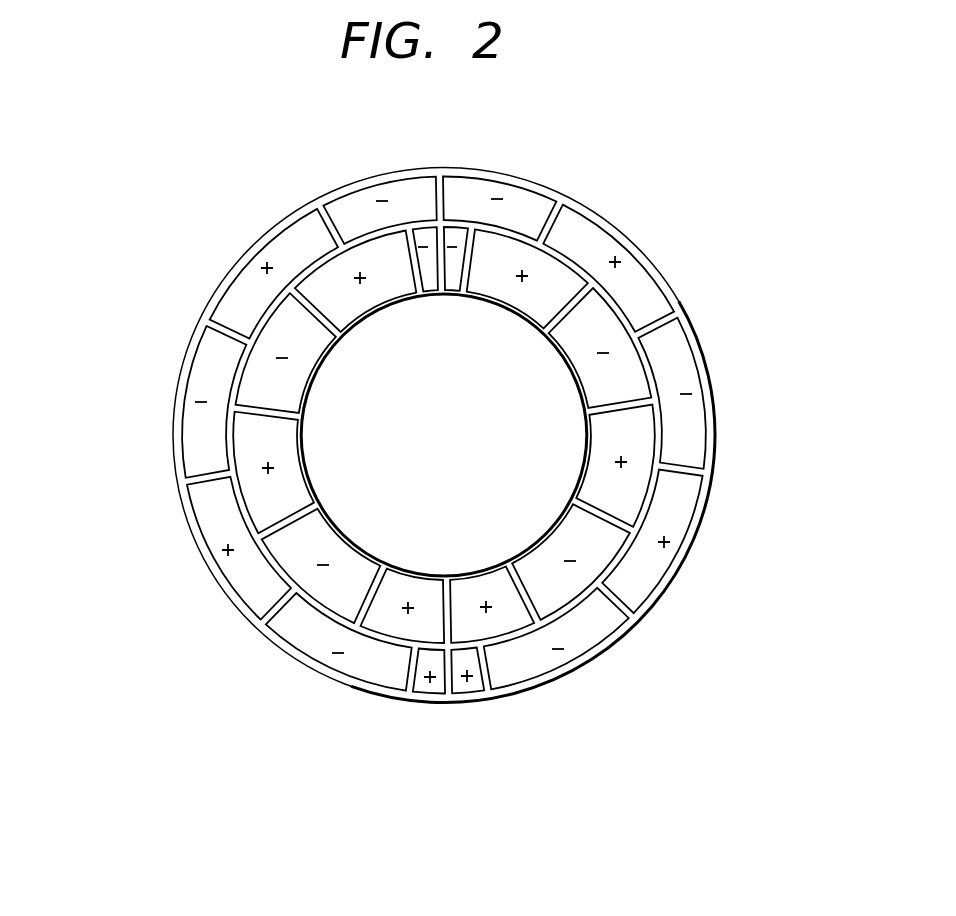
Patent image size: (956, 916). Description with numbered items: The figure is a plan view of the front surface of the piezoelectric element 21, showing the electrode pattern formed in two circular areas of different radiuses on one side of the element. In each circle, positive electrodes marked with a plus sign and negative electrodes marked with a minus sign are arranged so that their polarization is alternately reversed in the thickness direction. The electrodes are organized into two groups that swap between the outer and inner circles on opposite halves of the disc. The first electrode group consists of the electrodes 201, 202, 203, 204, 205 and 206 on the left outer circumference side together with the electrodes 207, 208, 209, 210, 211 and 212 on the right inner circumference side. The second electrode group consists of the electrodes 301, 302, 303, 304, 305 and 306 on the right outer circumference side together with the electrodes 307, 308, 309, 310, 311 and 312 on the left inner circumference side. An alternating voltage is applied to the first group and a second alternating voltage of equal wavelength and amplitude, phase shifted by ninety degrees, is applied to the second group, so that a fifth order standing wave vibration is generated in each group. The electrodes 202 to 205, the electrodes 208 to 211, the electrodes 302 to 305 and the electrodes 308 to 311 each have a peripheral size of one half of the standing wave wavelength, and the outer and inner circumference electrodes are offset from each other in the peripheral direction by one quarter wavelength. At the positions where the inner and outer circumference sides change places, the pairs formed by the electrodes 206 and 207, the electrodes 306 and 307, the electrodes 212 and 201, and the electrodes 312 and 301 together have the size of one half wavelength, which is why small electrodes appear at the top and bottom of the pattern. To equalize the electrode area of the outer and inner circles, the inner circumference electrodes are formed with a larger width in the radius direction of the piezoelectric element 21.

The piezoelectric element 21 is at (778, 669).
The electrode 201 is at (400, 186).
The electrode 202 is at (290, 230).
The electrode 203 is at (192, 368).
The electrode 204 is at (197, 516).
The electrode 205 is at (305, 640).
The electrode 206 is at (428, 698).
The electrode 301 is at (487, 188).
The electrode 302 is at (590, 222).
The electrode 303 is at (690, 352).
The electrode 304 is at (686, 520).
The electrode 305 is at (578, 650).
The electrode 306 is at (462, 698).
The electrode 207 is at (478, 590).
The electrode 208 is at (568, 530).
The electrode 209 is at (605, 443).
The electrode 210 is at (590, 378).
The electrode 211 is at (517, 295).
The electrode 212 is at (452, 284).
The electrode 307 is at (402, 587).
The electrode 308 is at (313, 535).
The electrode 309 is at (282, 447).
The electrode 310 is at (297, 380).
The electrode 311 is at (360, 303).
The electrode 312 is at (427, 288).